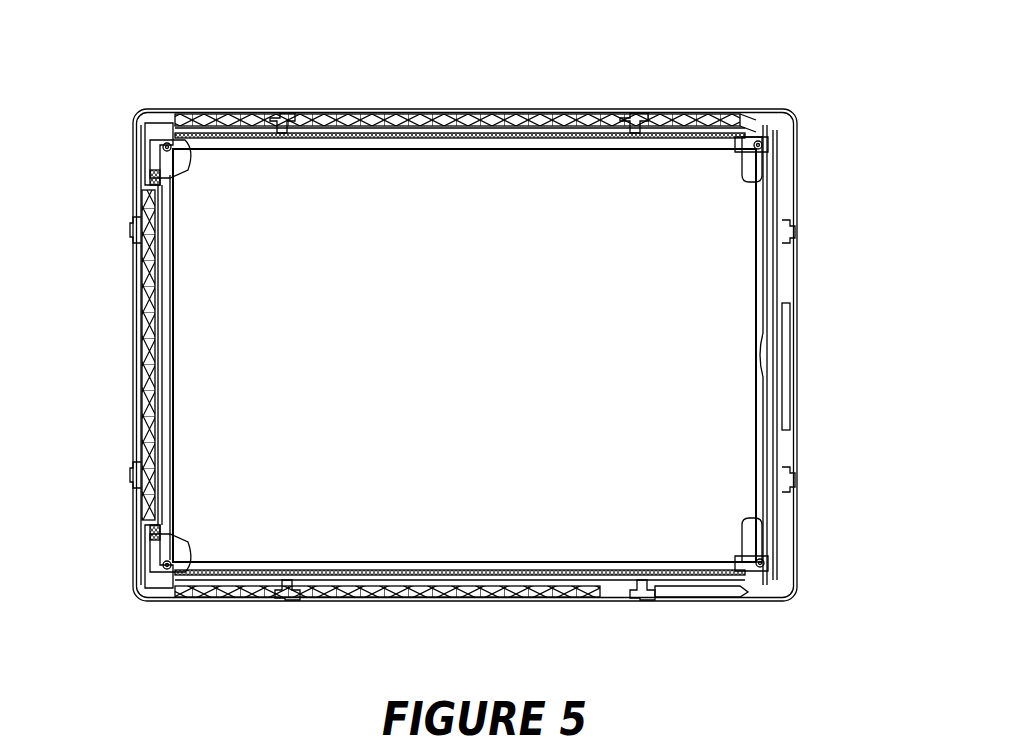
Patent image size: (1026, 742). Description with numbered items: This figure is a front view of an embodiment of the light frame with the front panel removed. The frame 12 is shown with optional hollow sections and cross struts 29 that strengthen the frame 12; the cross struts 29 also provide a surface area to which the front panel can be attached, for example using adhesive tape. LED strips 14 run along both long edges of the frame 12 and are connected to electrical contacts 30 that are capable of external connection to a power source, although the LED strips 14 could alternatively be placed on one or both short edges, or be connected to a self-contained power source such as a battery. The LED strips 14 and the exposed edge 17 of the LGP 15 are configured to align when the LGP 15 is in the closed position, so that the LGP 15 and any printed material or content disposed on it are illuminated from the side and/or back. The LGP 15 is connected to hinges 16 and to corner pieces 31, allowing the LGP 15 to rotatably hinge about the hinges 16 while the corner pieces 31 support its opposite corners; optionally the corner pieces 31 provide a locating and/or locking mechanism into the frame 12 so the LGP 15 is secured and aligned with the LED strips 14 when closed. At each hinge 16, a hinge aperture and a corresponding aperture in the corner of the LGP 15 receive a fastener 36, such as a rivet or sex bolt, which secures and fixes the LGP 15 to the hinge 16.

The frame 12 is at (742, 108).
The LED strip 14 is at (398, 130).
The LGP 15 is at (464, 355).
The hinge 16 is at (150, 172).
The exposed edge 17 is at (306, 150).
The cross strut 29 is at (140, 383).
The electrical contact 30 is at (283, 112).
The corner piece 31 is at (770, 182).
The fastener 36 is at (770, 140).